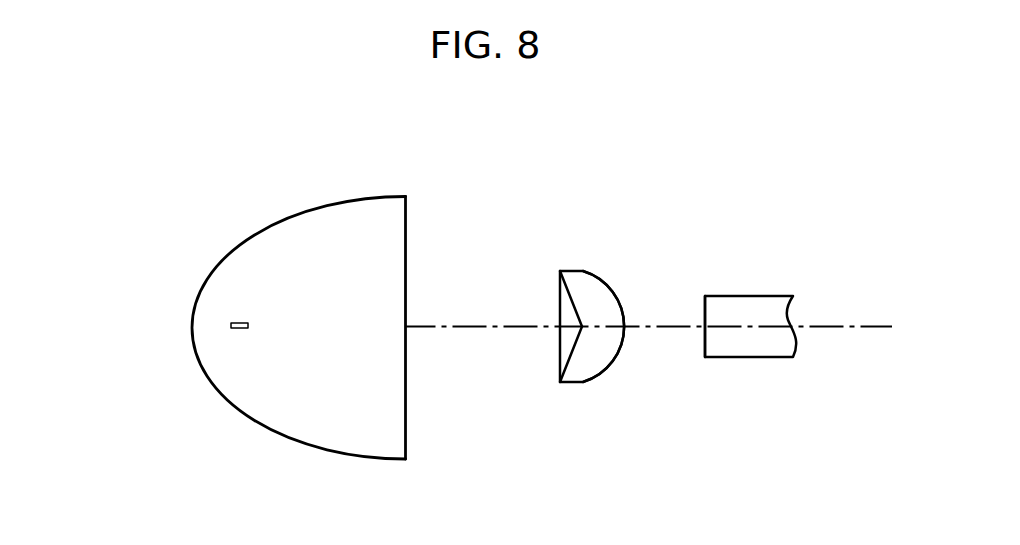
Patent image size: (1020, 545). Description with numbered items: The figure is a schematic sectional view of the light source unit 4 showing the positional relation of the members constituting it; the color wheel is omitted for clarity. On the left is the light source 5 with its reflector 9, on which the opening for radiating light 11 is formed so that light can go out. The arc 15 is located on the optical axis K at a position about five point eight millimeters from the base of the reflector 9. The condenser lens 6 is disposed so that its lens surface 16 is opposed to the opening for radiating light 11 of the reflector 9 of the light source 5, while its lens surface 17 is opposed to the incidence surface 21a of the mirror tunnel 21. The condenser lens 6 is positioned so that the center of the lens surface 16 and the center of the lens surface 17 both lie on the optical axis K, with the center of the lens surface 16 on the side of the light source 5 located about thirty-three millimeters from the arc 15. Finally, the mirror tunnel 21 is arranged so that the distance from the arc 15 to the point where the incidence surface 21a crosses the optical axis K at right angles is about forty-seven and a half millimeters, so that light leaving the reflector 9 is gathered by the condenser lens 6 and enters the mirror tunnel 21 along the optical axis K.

The light source 5 is at (353, 172).
The reflector 9 is at (278, 222).
The opening for radiating light 11 is at (407, 207).
The arc 15 is at (241, 329).
The optical axis K is at (436, 325).
The light source unit 4 is at (640, 183).
The condenser lens 6 is at (567, 270).
The lens surface 16 is at (565, 290).
The lens surface 17 is at (598, 280).
The mirror tunnel 21 is at (745, 295).
The incidence surface 21a is at (703, 304).